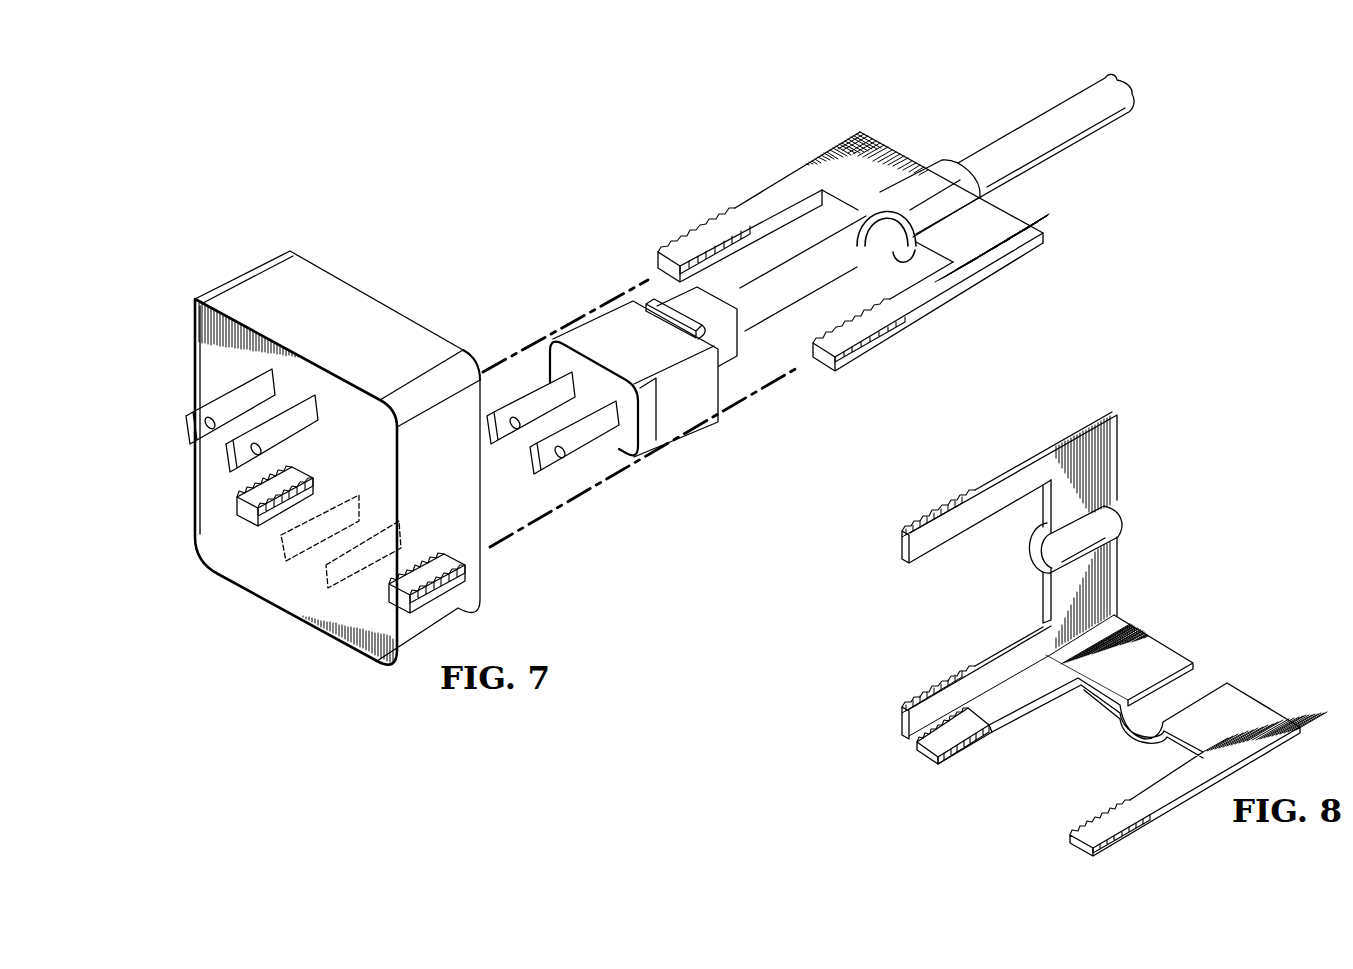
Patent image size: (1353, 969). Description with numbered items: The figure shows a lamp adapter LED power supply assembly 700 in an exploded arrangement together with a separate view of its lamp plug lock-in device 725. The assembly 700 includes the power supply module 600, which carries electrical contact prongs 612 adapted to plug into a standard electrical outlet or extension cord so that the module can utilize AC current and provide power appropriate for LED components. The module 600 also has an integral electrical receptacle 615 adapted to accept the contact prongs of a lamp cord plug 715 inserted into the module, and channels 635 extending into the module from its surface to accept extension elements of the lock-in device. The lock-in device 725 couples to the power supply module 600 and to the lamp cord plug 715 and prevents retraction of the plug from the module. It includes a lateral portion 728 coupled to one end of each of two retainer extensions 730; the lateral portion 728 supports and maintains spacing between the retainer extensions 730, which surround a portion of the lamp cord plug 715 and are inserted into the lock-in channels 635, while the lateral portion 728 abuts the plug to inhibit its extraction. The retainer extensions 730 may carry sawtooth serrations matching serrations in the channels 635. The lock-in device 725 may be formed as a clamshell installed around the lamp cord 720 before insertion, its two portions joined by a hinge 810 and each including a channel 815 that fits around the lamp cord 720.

In FIG. 7, the power supply module 600 is at (238, 255).
In FIG. 7, the electrical contact prongs 612 is at (187, 433).
In FIG. 7, the electrical receptacle 615 is at (283, 540).
In FIG. 7, the channels 635 is at (302, 469).
In FIG. 7, the power supply assembly 700 is at (411, 213).
In FIG. 7, the lamp cord plug 715 is at (617, 310).
In FIG. 7, the lamp cord 720 is at (1013, 128).
In FIG. 7, the lock-in device 725 is at (844, 255).
In FIG. 8, the lock-in device 725 is at (1114, 634).
In FIG. 7, the lateral portion 728 is at (969, 294).
In FIG. 7, the retainer extensions 730 is at (668, 245).
In FIG. 8, the hinge 810 is at (1124, 620).
In FIG. 8, the channel 815 is at (1197, 690).